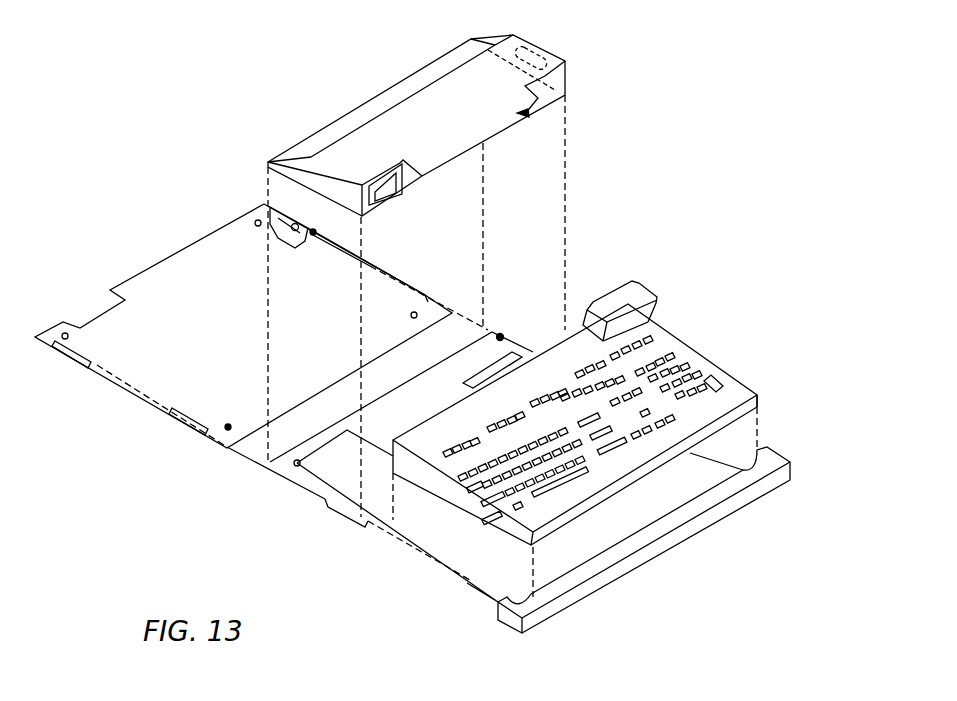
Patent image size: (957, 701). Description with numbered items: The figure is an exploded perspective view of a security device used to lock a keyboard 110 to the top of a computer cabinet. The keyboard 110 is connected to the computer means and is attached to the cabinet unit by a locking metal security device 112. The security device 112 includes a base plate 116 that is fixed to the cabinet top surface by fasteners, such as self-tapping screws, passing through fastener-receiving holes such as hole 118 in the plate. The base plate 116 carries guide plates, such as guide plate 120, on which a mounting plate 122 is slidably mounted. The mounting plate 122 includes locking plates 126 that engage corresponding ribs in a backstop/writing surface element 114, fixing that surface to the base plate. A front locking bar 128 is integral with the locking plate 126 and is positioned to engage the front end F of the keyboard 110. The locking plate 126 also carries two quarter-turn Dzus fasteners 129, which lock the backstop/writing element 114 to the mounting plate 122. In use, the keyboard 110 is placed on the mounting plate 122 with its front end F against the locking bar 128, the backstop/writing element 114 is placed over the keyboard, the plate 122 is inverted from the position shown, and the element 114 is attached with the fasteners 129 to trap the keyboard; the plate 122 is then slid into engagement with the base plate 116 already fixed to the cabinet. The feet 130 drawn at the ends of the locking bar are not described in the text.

The keyboard 110 is at (707, 337).
The locking metal security device 112 is at (178, 245).
The backstop/writing surface element 114 is at (565, 61).
The base plate 116 is at (132, 362).
The hole 118 is at (64, 333).
The guide plate 120 is at (407, 282).
The mounting plate 122 is at (427, 387).
The locking plate 126 is at (347, 505).
The front locking bar 128 is at (703, 522).
The Dzus fasteners 129 is at (502, 334).
The feet 130 is at (777, 455).
The front end F is at (762, 398).